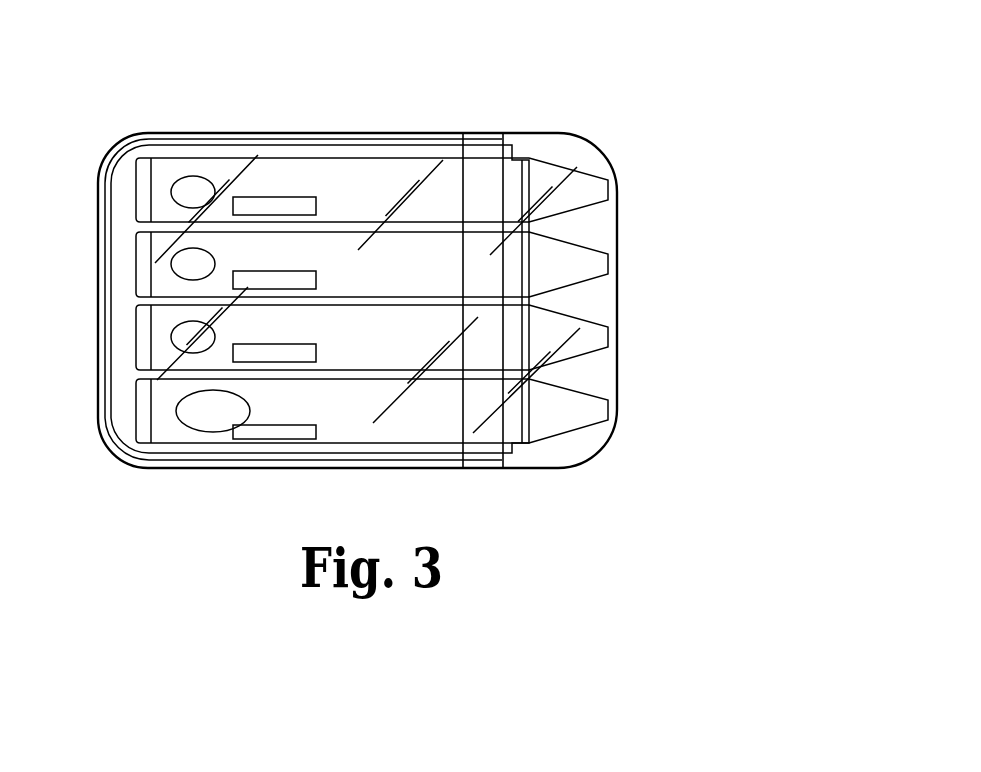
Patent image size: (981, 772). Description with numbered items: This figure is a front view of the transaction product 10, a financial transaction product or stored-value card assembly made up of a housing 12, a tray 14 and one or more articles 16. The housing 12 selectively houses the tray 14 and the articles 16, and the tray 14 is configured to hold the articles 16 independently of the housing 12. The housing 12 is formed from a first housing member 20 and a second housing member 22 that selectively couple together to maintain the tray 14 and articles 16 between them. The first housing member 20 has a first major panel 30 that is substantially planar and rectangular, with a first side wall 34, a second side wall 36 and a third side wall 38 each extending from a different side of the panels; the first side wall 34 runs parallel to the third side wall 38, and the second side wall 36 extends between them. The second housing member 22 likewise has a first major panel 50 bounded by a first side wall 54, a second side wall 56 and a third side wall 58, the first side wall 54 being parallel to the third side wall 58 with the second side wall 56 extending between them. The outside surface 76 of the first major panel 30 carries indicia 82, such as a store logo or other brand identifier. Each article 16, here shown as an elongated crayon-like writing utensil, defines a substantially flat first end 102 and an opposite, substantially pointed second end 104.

The transaction product 10 is at (592, 57).
The housing 12 is at (602, 173).
The tray 14 is at (255, 448).
The article 16 is at (577, 413).
The first housing member 20 is at (127, 374).
The second housing member 22 is at (563, 467).
The first major panel 30 is at (104, 295).
The first side wall 34 is at (173, 469).
The second side wall 36 is at (99, 223).
The third side wall 38 is at (259, 133).
The first major panel 50 is at (583, 298).
The first side wall 54 is at (483, 468).
The second side wall 56 is at (617, 367).
The third side wall 58 is at (503, 133).
The outside surface 76 is at (203, 139).
The indicia 82 is at (180, 407).
The first end 102 is at (170, 207).
The second end 104 is at (577, 195).